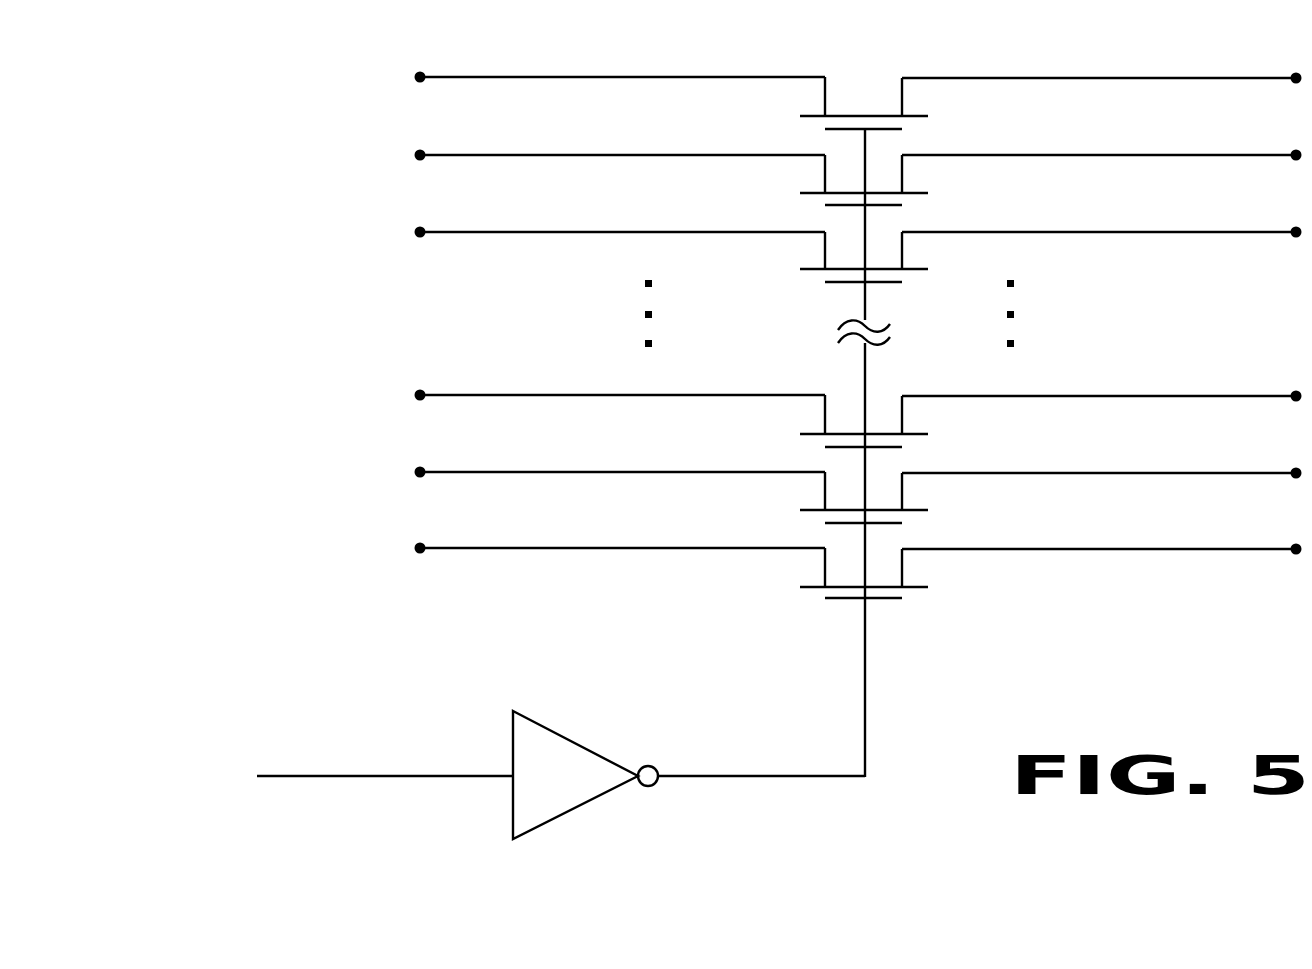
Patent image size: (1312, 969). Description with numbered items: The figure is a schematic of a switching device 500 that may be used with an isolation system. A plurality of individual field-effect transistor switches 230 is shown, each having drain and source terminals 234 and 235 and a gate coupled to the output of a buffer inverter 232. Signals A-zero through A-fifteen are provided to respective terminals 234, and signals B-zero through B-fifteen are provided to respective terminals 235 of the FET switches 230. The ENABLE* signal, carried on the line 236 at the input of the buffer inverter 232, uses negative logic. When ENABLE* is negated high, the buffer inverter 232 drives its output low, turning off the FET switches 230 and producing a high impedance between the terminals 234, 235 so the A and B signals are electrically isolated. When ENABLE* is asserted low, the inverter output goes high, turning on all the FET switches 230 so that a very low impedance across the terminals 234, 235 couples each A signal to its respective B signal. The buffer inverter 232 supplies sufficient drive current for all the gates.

The switching device 500 is at (347, 132).
The drain terminal 234 is at (587, 75).
The source terminal 235 is at (1040, 78).
The field-effect transistor switch 230 is at (915, 587).
The buffer inverter 232 is at (590, 747).
The ENABLE* input line 236 is at (422, 777).